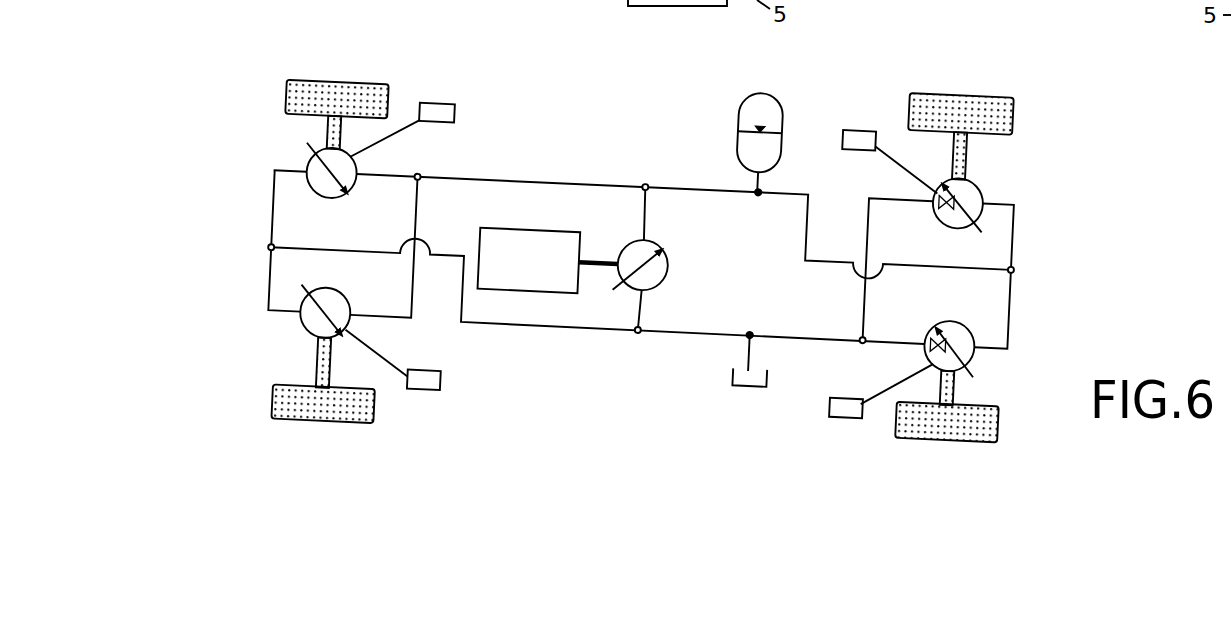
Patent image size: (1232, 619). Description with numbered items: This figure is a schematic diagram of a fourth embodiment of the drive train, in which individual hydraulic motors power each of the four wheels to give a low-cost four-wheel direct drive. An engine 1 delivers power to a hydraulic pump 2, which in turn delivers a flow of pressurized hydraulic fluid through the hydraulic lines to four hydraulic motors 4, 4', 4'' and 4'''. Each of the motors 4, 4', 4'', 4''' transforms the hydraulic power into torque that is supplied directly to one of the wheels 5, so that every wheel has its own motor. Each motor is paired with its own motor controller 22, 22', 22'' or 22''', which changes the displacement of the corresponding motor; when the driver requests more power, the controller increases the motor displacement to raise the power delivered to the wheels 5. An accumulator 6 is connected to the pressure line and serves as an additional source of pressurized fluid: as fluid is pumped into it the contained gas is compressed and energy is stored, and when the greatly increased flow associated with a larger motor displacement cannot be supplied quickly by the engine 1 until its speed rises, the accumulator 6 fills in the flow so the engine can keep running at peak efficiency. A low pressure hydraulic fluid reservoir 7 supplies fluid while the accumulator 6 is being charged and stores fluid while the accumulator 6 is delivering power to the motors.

The engine 1 is at (520, 293).
The hydraulic pump 2 is at (647, 285).
The hydraulic motor 4 is at (982, 194).
The hydraulic motor 4' is at (976, 357).
The hydraulic motor 4'' is at (287, 161).
The hydraulic motor 4''' is at (282, 325).
The wheels 5 is at (320, 102).
The accumulator 6 is at (738, 115).
The low pressure hydraulic fluid reservoir 7 is at (732, 375).
The motor controller 22 is at (882, 132).
The motor controller 22' is at (850, 406).
The motor controller 22'' is at (428, 109).
The motor controller 22''' is at (426, 382).